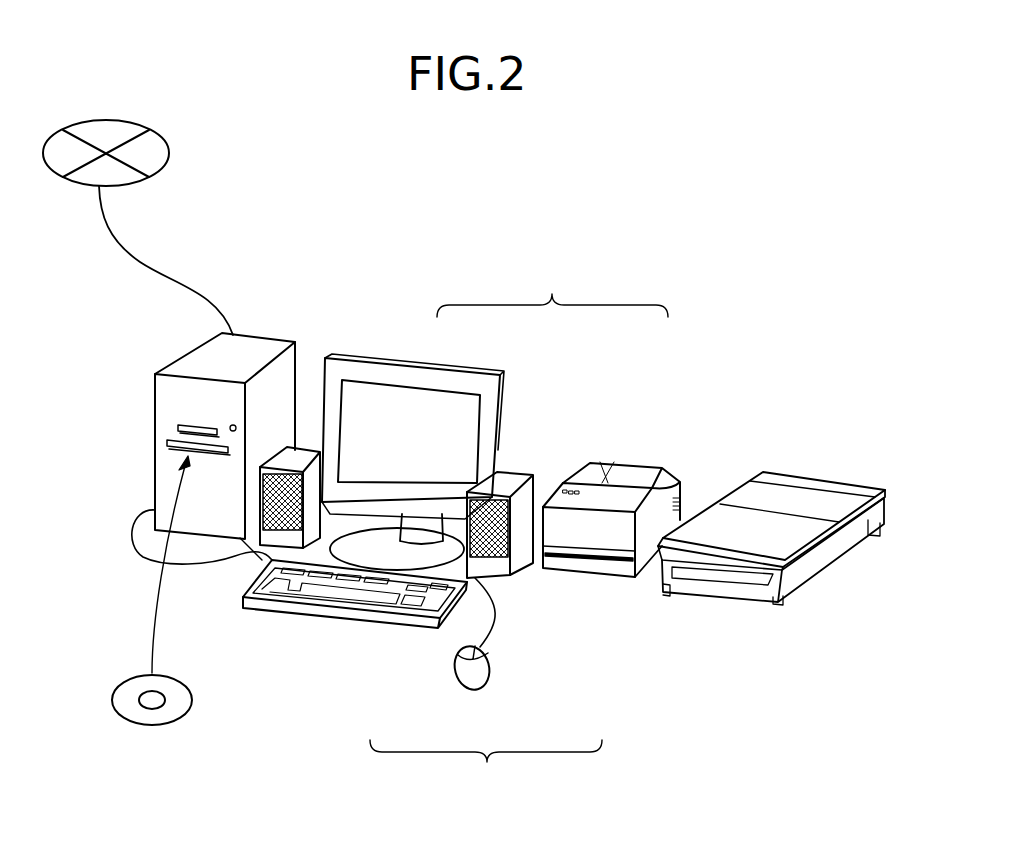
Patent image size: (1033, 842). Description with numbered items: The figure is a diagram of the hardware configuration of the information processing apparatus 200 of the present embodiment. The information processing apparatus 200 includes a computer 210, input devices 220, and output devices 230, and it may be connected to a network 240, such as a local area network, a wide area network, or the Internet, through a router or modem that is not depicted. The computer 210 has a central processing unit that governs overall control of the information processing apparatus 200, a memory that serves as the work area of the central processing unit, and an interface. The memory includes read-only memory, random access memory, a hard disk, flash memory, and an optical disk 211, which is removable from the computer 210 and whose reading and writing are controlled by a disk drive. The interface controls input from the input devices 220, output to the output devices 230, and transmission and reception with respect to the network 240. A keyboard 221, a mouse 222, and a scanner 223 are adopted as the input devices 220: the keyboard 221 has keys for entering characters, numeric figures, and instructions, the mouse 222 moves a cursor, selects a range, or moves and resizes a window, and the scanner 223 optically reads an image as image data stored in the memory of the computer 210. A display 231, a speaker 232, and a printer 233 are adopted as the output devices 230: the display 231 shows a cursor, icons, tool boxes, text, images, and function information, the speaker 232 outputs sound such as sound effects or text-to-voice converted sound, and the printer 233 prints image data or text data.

The information processing apparatus 200 is at (666, 202).
The computer 210 is at (257, 336).
The optical disk 211 is at (175, 674).
The input devices 220 is at (486, 766).
The keyboard 221 is at (383, 627).
The mouse 222 is at (470, 690).
The scanner 223 is at (693, 596).
The output devices 230 is at (552, 290).
The display 231 is at (468, 372).
The speaker 232 is at (533, 470).
The printer 233 is at (632, 463).
The network 240 is at (120, 120).